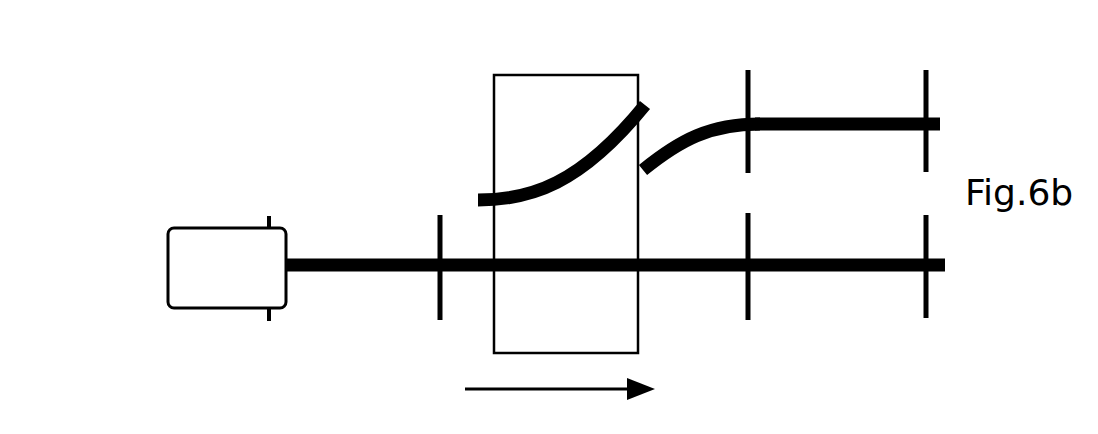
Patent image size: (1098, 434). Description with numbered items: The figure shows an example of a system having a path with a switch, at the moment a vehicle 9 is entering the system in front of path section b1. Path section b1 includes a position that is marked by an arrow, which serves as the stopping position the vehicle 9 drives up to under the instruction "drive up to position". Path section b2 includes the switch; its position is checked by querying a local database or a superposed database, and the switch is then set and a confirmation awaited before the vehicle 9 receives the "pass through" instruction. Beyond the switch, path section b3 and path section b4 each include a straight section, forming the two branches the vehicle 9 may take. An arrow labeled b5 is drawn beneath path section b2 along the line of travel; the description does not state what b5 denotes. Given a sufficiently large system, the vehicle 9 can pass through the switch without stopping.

The vehicle 9 is at (227, 268).
The path section b1 is at (410, 247).
The path section b2 is at (619, 190).
The path section b3 is at (893, 100).
The path section b4 is at (893, 244).
The direction of movement b5 is at (560, 406).